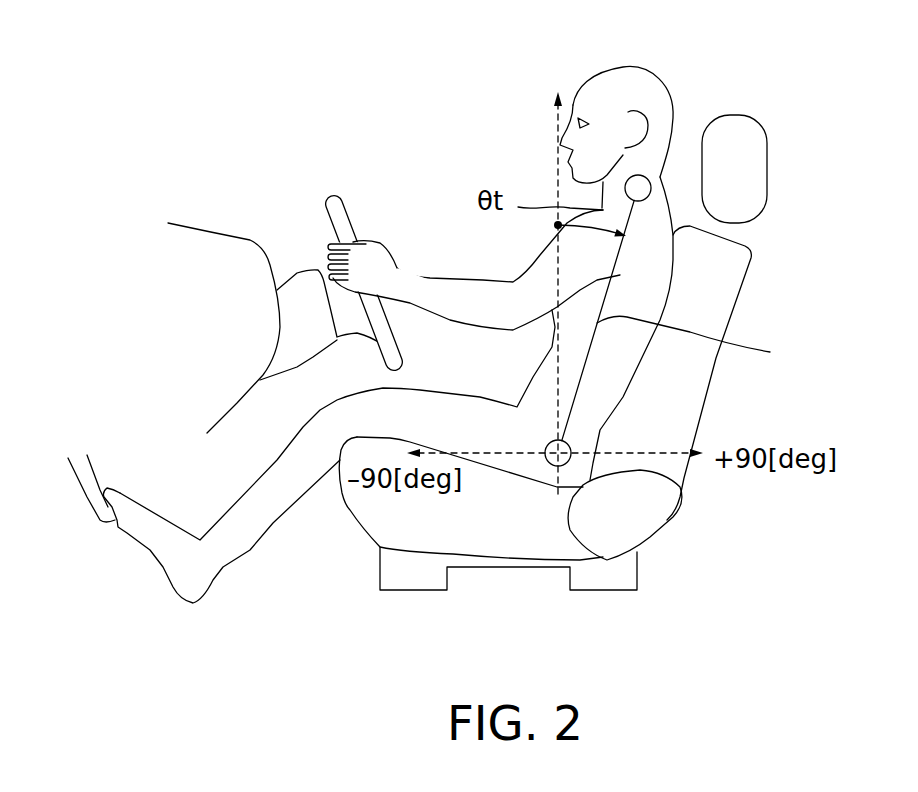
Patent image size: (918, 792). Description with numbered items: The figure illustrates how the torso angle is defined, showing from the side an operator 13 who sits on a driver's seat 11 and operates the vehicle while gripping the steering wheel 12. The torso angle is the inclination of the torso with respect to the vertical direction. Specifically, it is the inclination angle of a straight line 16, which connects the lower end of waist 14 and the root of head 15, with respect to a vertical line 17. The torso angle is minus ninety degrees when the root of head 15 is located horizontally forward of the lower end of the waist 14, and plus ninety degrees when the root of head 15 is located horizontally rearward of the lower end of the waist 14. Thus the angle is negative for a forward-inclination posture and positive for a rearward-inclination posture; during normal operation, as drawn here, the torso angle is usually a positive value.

The driver's seat 11 is at (740, 293).
The steering wheel 12 is at (326, 196).
The operator 13 is at (627, 63).
The lower end of waist 14 is at (572, 465).
The root of head 15 is at (650, 182).
The straight line 16 is at (701, 341).
The vertical line 17 is at (557, 163).